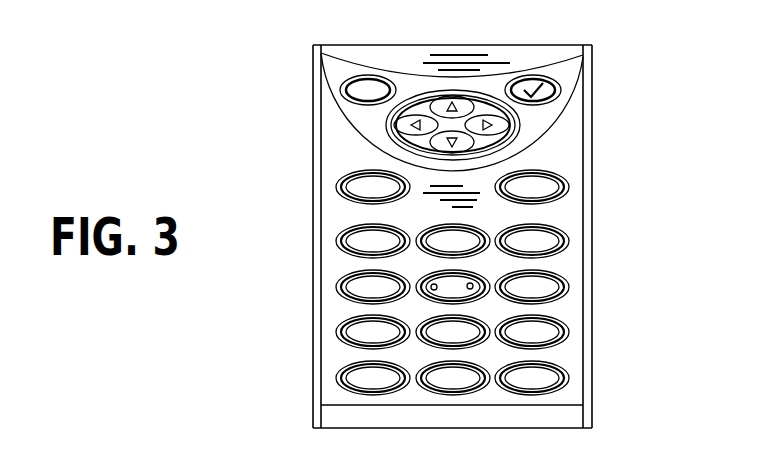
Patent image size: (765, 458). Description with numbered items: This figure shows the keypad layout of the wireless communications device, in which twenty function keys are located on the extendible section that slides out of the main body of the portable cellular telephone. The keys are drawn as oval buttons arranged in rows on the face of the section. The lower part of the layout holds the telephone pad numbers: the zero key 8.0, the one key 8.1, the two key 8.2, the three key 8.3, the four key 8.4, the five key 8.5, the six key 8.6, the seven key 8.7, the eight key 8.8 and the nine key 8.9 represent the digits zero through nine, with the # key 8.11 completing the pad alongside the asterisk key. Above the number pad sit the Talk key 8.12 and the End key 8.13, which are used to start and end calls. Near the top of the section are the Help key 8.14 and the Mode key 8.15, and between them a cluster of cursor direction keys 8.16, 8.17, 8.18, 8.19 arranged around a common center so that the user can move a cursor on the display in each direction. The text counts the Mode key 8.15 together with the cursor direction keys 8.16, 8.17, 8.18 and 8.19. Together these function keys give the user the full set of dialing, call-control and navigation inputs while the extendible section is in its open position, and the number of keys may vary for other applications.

The zero key 8.0 is at (445, 378).
The one key 8.1 is at (355, 243).
The two key 8.2 is at (467, 240).
The three key 8.3 is at (548, 240).
The four key 8.4 is at (355, 288).
The five key 8.5 is at (470, 279).
The six key 8.6 is at (545, 292).
The seven key 8.7 is at (355, 332).
The eight key 8.8 is at (465, 332).
The nine key 8.9 is at (547, 332).
The # key 8.11 is at (545, 378).
The Talk key 8.12 is at (355, 186).
The End key 8.13 is at (547, 185).
The Help key 8.14 is at (352, 86).
The Mode key 8.15 is at (555, 88).
The cursor direction key 8.16 is at (400, 126).
The cursor direction key 8.17 is at (472, 146).
The cursor direction key 8.18 is at (508, 125).
The cursor direction key 8.19 is at (459, 100).